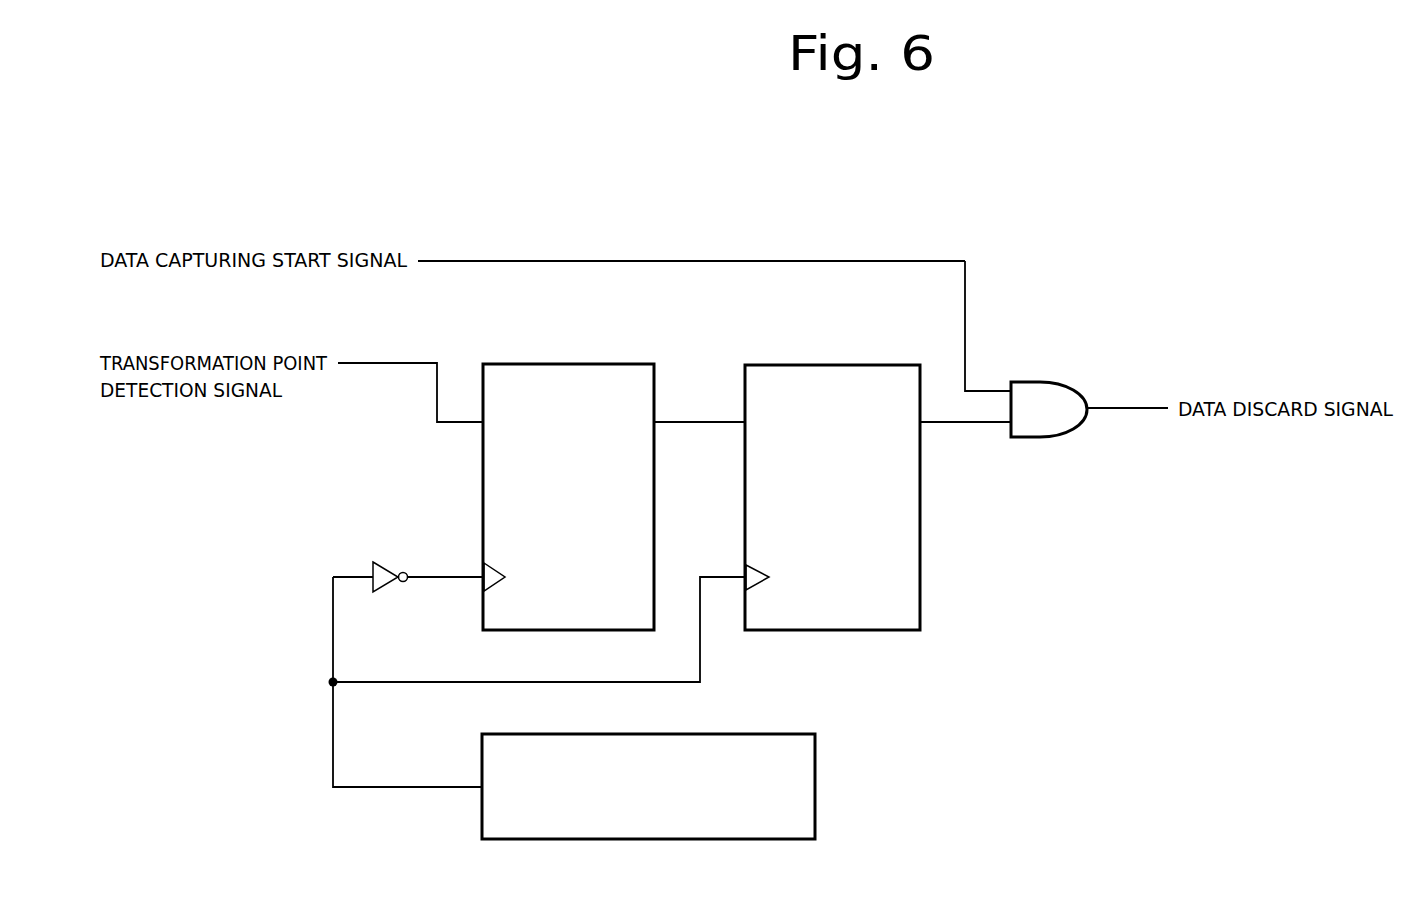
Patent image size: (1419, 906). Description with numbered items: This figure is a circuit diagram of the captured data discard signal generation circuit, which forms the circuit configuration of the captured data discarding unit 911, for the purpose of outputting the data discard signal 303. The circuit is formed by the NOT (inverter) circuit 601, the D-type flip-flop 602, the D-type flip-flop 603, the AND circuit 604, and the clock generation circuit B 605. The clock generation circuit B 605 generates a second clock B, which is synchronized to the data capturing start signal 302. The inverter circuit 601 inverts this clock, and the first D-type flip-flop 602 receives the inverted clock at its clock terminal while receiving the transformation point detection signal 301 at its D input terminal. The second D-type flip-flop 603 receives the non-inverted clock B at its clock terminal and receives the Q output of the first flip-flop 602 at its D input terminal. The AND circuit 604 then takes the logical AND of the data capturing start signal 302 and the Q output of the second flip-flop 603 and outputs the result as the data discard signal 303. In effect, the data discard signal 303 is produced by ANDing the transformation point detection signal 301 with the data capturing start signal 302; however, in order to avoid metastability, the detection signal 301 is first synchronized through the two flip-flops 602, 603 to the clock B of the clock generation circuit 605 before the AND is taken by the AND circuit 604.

The transformation point detection signal 301 is at (376, 365).
The data capturing start signal 302 is at (793, 258).
The data discard signal 303 is at (1129, 410).
The NOT (inverter) circuit 601 is at (394, 567).
The D-type flip-flop 602 is at (587, 362).
The D-type flip-flop 603 is at (849, 363).
The AND circuit 604 is at (1042, 380).
The clock generation circuit B 605 is at (815, 771).
The captured data discarding unit 911 is at (876, 223).